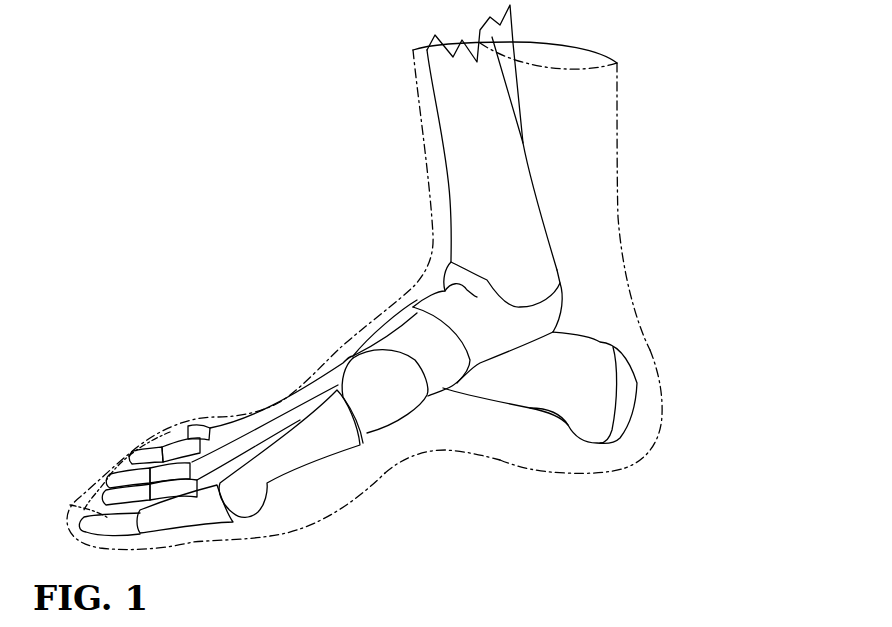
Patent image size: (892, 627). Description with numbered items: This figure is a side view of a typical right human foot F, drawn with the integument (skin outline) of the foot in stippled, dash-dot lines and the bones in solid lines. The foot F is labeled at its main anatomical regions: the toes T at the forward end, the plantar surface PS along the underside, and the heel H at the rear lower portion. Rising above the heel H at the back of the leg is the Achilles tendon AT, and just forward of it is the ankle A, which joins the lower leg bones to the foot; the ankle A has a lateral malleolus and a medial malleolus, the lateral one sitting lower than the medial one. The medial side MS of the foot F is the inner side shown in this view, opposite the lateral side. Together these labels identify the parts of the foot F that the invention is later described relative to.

The human foot F is at (215, 145).
The ankle A is at (504, 247).
The Achilles tendon AT is at (627, 267).
The heel H is at (663, 415).
The toes T is at (173, 487).
The medial side MS is at (428, 430).
The plantar surface PS is at (523, 467).